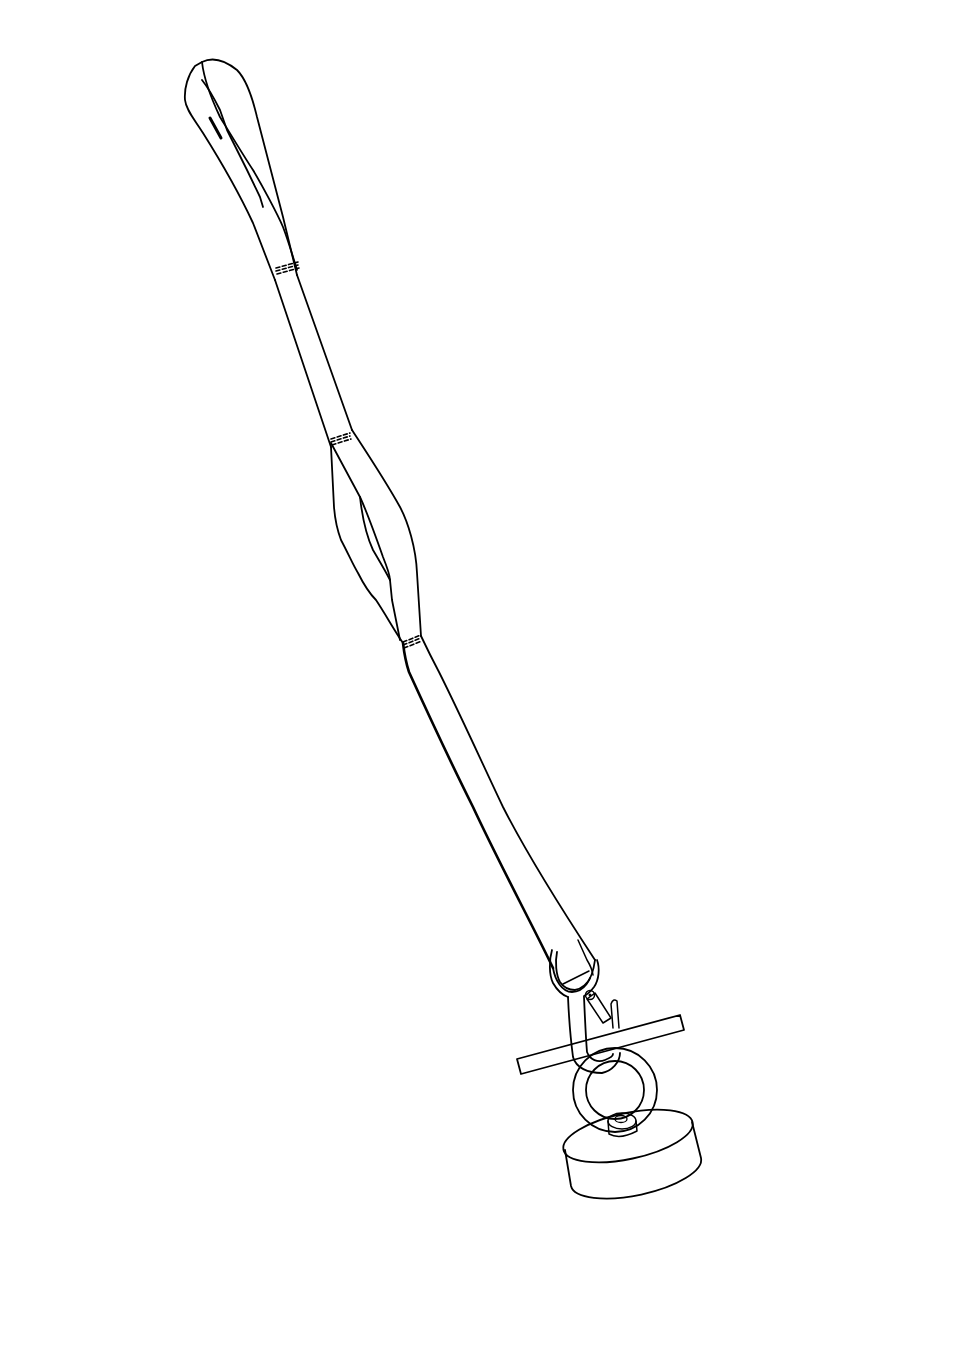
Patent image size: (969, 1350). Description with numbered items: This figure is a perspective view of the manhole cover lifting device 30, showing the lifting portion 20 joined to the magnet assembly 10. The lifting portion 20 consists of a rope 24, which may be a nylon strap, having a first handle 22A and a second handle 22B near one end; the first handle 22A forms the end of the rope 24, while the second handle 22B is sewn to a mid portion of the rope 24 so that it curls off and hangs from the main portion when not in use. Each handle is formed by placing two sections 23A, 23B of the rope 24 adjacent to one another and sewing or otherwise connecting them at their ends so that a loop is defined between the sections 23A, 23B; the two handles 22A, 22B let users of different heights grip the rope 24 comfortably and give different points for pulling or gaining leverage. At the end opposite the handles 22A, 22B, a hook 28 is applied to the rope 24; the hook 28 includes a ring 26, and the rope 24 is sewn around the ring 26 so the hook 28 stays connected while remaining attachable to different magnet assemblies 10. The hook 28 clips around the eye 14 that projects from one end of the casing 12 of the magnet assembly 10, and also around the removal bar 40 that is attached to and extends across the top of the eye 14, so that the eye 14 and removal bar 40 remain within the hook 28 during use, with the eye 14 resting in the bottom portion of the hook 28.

The magnet assembly 10 is at (720, 1169).
The casing 12 is at (584, 1155).
The eye 14 is at (655, 1083).
The lifting portion 20 is at (437, 705).
The first handle 22A is at (238, 91).
The second handle 22B is at (348, 520).
The first section of rope 23A is at (262, 210).
The second section of rope 23B is at (255, 160).
The rope 24 is at (332, 400).
The ring 26 is at (590, 960).
The hook 28 is at (617, 1007).
The manhole cover lifting device 30 is at (130, 128).
The removal bar 40 is at (664, 1020).